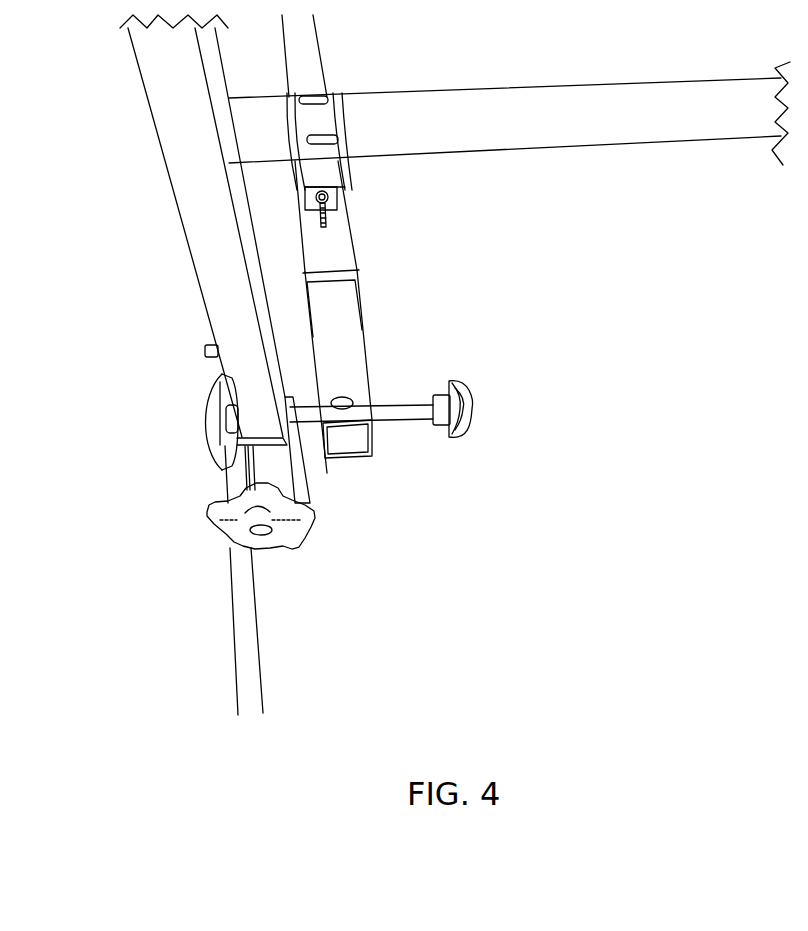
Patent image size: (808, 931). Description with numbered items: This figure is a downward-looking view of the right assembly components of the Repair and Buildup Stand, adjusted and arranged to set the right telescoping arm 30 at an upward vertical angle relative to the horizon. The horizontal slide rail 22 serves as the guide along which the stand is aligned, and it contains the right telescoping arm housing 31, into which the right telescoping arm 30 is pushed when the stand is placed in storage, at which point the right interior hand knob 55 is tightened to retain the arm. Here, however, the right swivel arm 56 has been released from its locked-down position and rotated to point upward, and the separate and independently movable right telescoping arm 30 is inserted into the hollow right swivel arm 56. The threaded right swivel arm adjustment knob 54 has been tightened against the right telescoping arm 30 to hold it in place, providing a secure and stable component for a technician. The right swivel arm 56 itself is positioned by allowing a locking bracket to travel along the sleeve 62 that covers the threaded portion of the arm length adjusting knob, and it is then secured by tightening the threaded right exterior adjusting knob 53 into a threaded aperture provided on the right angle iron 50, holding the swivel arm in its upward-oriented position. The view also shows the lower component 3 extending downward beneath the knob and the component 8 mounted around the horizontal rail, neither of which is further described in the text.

The leg pole 3 is at (238, 628).
The clamp 8 is at (329, 108).
The horizontal slide rail 22 is at (342, 233).
The right telescoping arm 30 is at (150, 98).
The right telescoping arm housing 31 is at (380, 442).
The right angle iron 50 is at (327, 482).
The right exterior adjusting knob 53 is at (210, 392).
The right swivel arm adjustment knob 54 is at (288, 547).
The right interior hand knob 55 is at (472, 402).
The right swivel arm 56 is at (260, 472).
The sleeve 62 is at (393, 402).